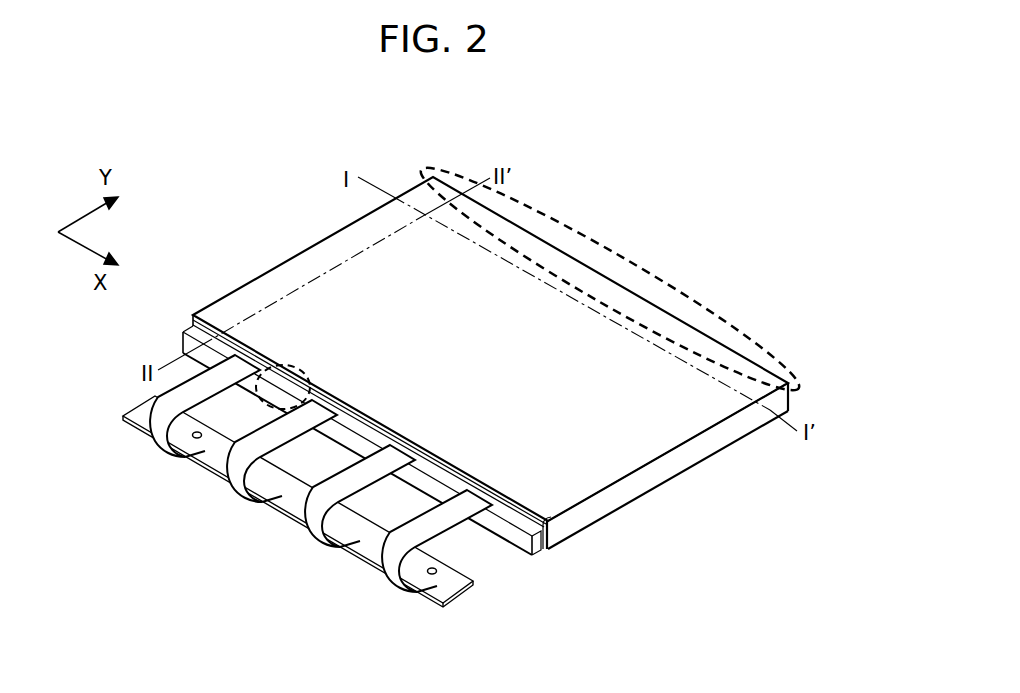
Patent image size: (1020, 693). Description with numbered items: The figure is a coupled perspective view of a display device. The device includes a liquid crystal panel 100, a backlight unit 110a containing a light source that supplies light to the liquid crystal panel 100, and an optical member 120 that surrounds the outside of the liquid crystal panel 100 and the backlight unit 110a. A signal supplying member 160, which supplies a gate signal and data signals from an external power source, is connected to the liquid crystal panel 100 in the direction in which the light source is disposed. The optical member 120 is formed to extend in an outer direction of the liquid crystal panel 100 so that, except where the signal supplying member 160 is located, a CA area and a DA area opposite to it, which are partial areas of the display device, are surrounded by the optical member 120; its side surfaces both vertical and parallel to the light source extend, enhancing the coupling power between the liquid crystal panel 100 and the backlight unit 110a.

The liquid crystal panel 100 is at (552, 511).
The backlight unit 110a is at (503, 540).
The optical member 120 is at (643, 448).
The signal supplying member 160 is at (443, 582).
The DA area DA is at (606, 248).
The CA area CA is at (250, 398).